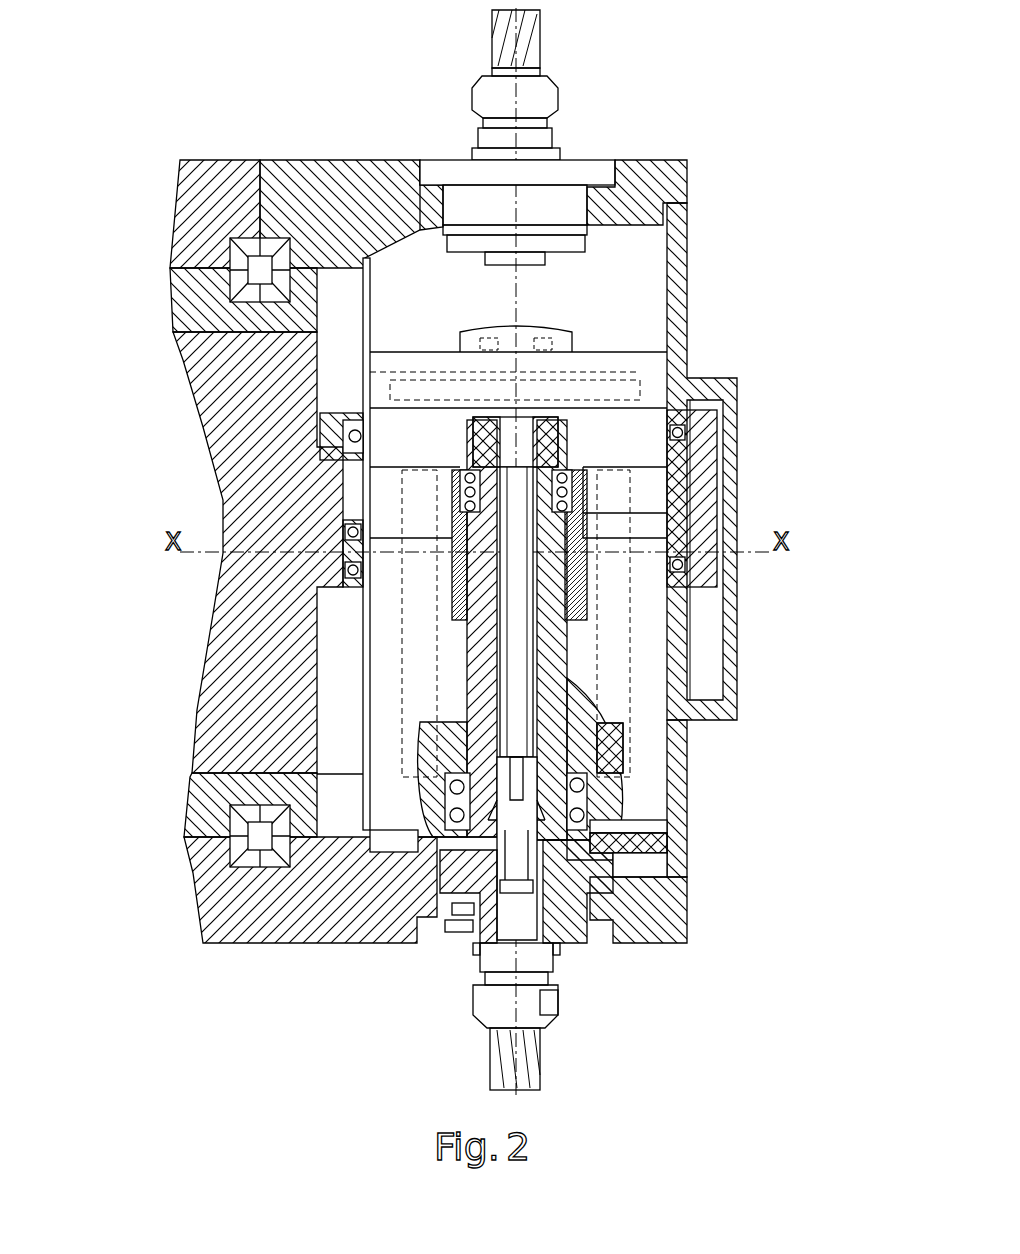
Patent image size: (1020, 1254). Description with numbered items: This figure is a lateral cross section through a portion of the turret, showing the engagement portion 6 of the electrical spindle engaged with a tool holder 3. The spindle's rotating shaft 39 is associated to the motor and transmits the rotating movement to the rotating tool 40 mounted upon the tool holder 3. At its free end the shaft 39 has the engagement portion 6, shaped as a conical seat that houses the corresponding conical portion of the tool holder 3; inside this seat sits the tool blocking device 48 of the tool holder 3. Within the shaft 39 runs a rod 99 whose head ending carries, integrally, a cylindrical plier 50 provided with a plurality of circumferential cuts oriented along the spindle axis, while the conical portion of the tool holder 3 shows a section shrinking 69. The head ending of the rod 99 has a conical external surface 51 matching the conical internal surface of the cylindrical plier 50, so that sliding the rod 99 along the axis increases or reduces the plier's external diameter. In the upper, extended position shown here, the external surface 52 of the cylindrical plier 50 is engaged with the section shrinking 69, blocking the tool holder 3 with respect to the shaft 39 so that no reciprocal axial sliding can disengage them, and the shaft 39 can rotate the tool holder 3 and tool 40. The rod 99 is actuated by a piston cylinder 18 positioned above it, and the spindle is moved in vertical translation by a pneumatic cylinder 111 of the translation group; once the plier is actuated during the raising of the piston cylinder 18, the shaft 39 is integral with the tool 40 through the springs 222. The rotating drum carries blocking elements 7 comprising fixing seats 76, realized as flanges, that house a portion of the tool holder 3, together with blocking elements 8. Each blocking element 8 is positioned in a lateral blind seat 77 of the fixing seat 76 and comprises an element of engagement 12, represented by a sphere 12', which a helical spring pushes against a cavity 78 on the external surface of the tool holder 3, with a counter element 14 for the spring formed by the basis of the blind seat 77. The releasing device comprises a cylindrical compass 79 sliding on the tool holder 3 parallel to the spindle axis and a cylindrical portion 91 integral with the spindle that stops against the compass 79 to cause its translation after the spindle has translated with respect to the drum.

The piston cylinder 18 is at (607, 350).
The pneumatic cylinder 111 is at (717, 485).
The springs 222 is at (518, 674).
The tool blocking device 48 is at (440, 702).
The engagement portion 6 is at (600, 735).
The section shrinking 69 is at (445, 787).
The rotating shaft 39 is at (670, 762).
The rod 99 is at (690, 820).
The cylindrical plier 50 is at (470, 875).
The cylindrical portion 91 is at (480, 892).
The external surface 52 is at (690, 880).
The cylindrical compass 79 is at (460, 905).
The sphere 12' is at (742, 891).
The counter element 14 is at (450, 925).
The lateral blind seat 77 is at (445, 952).
The blocking element 8 is at (600, 950).
The blocking element 7 is at (420, 985).
The element of engagement 12 is at (573, 999).
The fixing seat 76 is at (600, 1000).
The tool holder 3 is at (475, 1003).
The conical external surface 51 is at (545, 930).
The cavity 78 is at (600, 1020).
The rotating tool 40 is at (490, 1058).